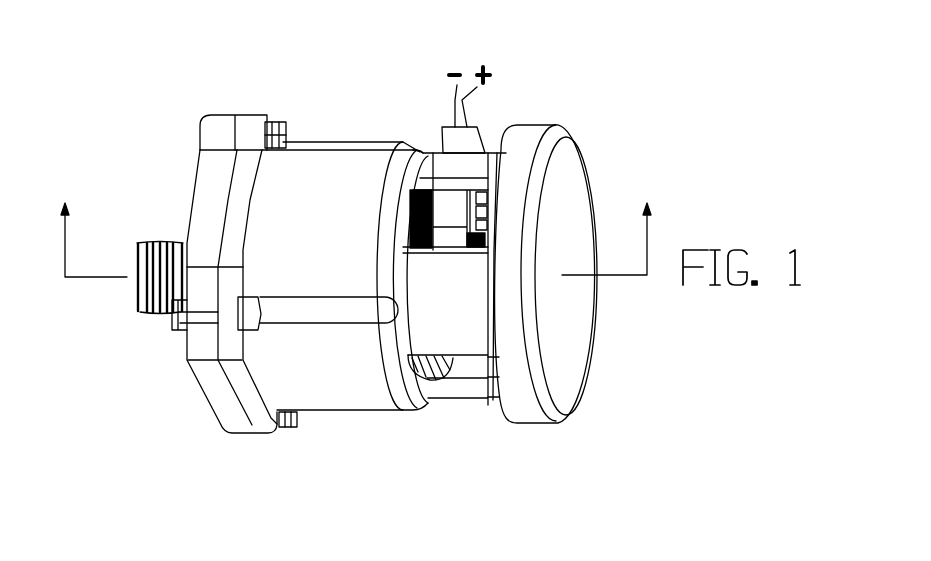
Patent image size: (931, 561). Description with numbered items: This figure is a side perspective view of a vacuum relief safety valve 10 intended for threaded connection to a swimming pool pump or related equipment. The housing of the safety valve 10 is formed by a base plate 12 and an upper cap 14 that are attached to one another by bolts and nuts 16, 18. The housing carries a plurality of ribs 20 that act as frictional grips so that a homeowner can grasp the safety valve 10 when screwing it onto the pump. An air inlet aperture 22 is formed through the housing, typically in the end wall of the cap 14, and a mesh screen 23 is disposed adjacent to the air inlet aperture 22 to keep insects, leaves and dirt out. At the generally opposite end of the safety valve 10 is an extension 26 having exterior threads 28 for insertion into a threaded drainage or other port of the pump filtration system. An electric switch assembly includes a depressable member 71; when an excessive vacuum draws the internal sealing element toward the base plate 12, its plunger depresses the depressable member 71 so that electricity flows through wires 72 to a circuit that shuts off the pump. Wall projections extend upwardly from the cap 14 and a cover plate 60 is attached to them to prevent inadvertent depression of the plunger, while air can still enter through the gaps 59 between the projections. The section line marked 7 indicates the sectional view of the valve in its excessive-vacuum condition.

The vacuum relief safety valve 10 is at (622, 117).
The base plate 12 is at (205, 357).
The upper cap 14 is at (399, 388).
The bolts 16 is at (202, 123).
The nuts 18 is at (267, 120).
The ribs 20 is at (318, 312).
The air inlet aperture 22 is at (417, 147).
The mesh screen 23 is at (414, 208).
The extension 26 is at (140, 243).
The exterior threads 28 is at (152, 313).
The gaps 59 is at (473, 365).
The cover plate 60 is at (557, 128).
The depressable member 71 is at (496, 148).
The wires 72 is at (470, 72).
The section line 7 is at (353, 223).